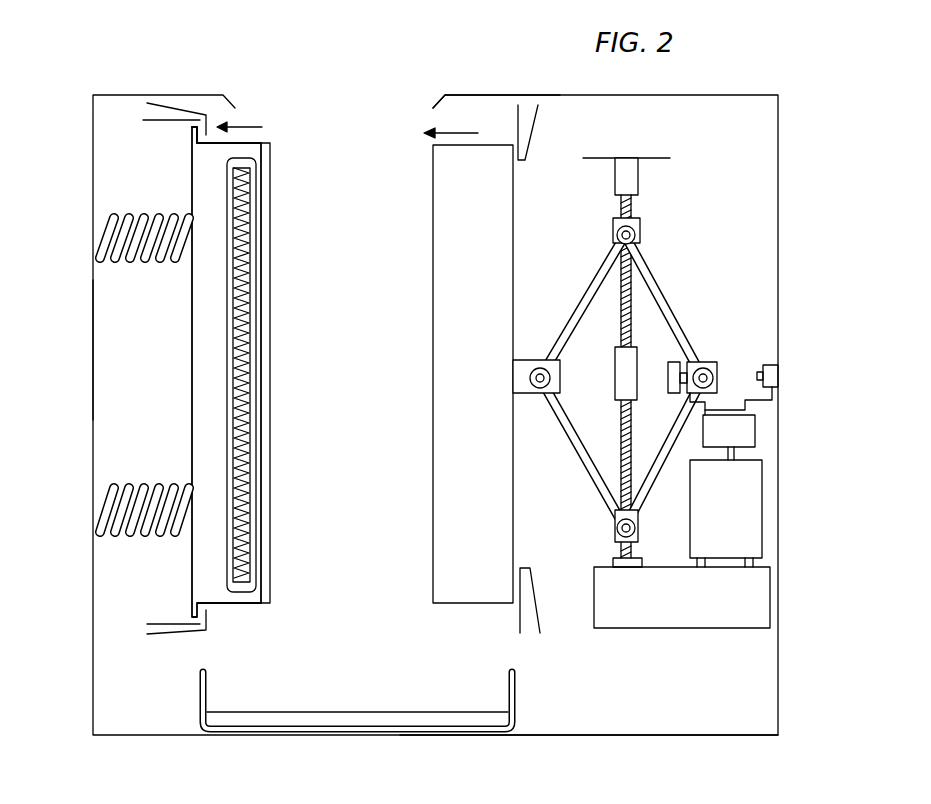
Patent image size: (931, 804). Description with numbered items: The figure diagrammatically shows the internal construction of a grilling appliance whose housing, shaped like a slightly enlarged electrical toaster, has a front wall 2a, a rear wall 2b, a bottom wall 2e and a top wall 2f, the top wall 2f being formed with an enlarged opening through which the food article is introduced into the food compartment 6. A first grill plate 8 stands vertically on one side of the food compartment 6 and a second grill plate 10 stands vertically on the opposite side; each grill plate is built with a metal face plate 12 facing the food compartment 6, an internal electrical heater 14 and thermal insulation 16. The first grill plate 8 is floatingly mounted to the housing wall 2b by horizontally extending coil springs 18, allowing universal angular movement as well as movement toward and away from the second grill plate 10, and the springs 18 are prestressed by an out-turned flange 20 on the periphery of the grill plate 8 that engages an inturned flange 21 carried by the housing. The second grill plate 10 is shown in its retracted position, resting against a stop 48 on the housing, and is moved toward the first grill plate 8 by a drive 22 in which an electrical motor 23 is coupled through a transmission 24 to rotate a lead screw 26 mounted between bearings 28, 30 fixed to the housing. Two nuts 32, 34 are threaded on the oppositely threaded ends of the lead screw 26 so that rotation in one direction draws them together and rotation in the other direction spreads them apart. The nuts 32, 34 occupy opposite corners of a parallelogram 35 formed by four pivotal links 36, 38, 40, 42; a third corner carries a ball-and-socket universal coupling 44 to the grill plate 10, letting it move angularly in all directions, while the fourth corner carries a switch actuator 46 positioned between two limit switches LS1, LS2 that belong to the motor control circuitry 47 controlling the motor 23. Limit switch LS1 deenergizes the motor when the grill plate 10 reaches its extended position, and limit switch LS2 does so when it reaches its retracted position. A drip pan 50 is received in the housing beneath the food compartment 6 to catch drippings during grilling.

The front wall 2a is at (778, 255).
The rear wall 2b is at (93, 325).
The bottom wall 2e is at (620, 735).
The top wall 2f is at (478, 94).
The food compartment 6 is at (348, 325).
The first grill plate 8 is at (274, 152).
The second grill plate 10 is at (420, 167).
The metal face plate 12 is at (266, 192).
The internal electrical heater 14 is at (238, 165).
The thermal insulation 16 is at (197, 195).
The coil springs 18 is at (100, 215).
The out-turned flange 20 is at (192, 130).
The inturned flange 21 is at (207, 100).
The drive 22 is at (769, 491).
The electrical motor 23 is at (745, 518).
The transmission 24 is at (745, 590).
The lead screw 26 is at (618, 305).
The bearing 28 is at (642, 178).
The bearing 30 is at (612, 560).
The nut 32 is at (612, 226).
The nut 34 is at (640, 524).
The parallelogram 35 is at (639, 380).
The pivotal link 36 is at (590, 310).
The pivotal link 38 is at (662, 258).
The pivotal link 40 is at (663, 456).
The pivotal link 42 is at (566, 440).
The ball-and-socket universal coupling 44 is at (520, 358).
The switch actuator 46 is at (716, 370).
The motor control circuitry 47 is at (757, 428).
The stop 48 is at (530, 120).
The drip pan 50 is at (325, 720).
The limit switch LS1 is at (779, 378).
The limit switch LS2 is at (700, 360).